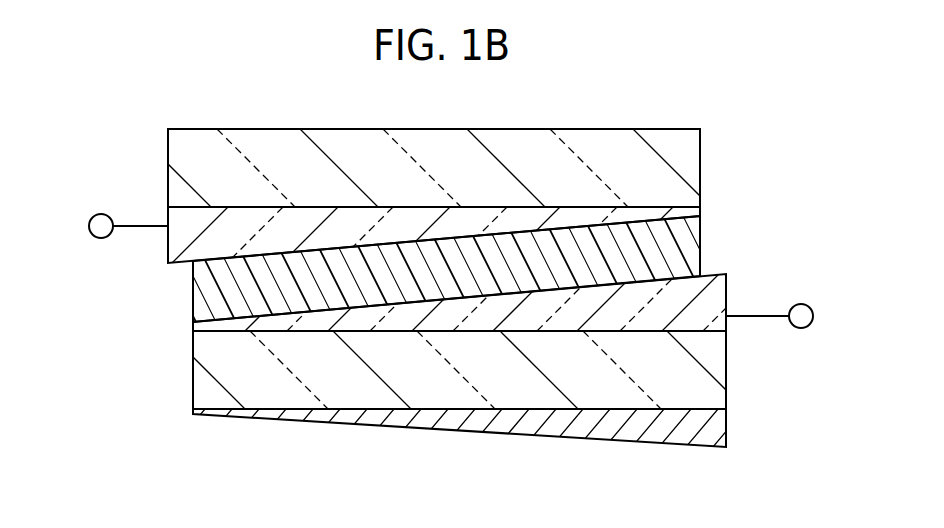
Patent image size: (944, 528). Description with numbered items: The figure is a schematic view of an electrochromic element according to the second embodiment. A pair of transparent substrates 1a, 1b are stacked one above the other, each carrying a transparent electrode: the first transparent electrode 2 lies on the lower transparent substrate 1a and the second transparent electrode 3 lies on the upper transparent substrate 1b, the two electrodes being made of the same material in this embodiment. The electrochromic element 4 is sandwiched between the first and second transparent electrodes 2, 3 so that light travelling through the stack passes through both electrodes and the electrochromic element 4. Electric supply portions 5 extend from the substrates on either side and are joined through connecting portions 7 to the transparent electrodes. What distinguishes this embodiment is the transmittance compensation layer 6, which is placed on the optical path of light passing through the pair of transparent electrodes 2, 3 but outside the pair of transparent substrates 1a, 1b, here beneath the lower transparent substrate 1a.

The transparent substrate 1a is at (568, 385).
The transparent substrate 1b is at (688, 173).
The first transparent electrode 2 is at (285, 325).
The second transparent electrode 3 is at (171, 247).
The electrochromic element 4 is at (688, 243).
The electric supply portions 5 is at (143, 226).
The transmittance compensation layer 6 is at (718, 427).
The connecting portions 7 is at (94, 214).